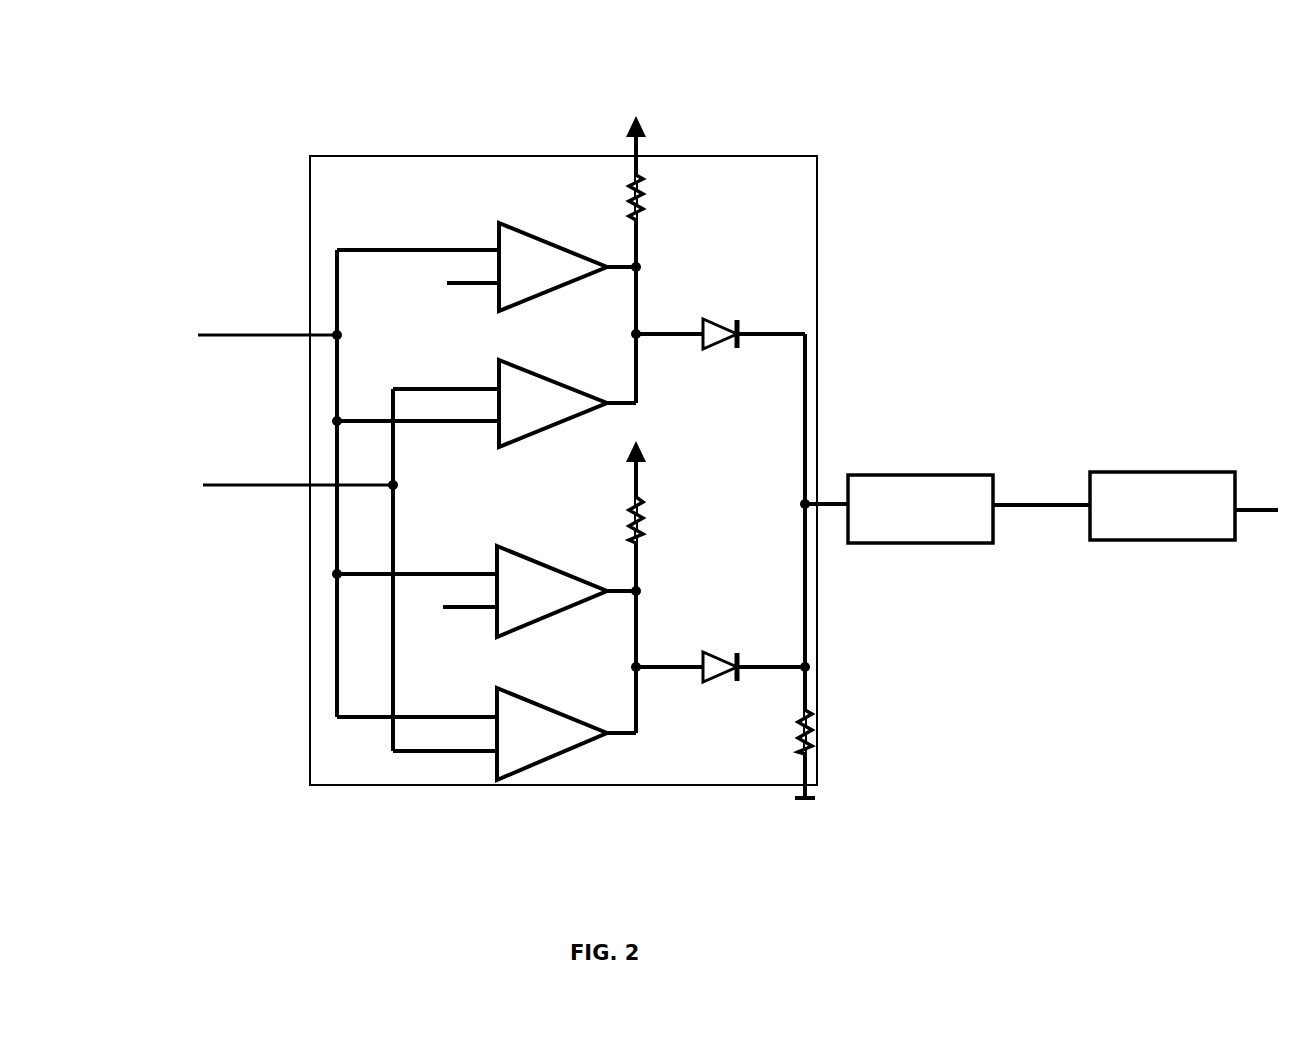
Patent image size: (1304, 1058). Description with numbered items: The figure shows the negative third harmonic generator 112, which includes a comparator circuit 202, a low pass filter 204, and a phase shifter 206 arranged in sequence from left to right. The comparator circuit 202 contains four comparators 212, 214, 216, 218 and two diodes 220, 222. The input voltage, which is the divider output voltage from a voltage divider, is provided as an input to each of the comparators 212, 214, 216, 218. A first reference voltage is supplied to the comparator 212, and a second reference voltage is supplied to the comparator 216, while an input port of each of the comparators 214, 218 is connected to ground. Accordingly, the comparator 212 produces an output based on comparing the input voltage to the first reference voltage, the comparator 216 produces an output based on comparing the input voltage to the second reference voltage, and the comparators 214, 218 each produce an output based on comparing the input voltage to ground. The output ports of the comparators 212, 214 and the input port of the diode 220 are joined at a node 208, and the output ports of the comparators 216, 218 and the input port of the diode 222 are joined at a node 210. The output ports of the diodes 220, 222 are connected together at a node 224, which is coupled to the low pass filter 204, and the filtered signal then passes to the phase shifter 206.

The negative third harmonic generator 112 is at (190, 113).
The comparator circuit 202 is at (428, 155).
The low pass filter 204 is at (935, 544).
The phase shifter 206 is at (1180, 472).
The node 208 is at (639, 331).
The node 210 is at (639, 664).
The comparator 212 is at (520, 226).
The comparator 214 is at (530, 367).
The comparator 216 is at (524, 552).
The comparator 218 is at (528, 698).
The diode 220 is at (716, 319).
The diode 222 is at (718, 651).
The node 224 is at (806, 501).